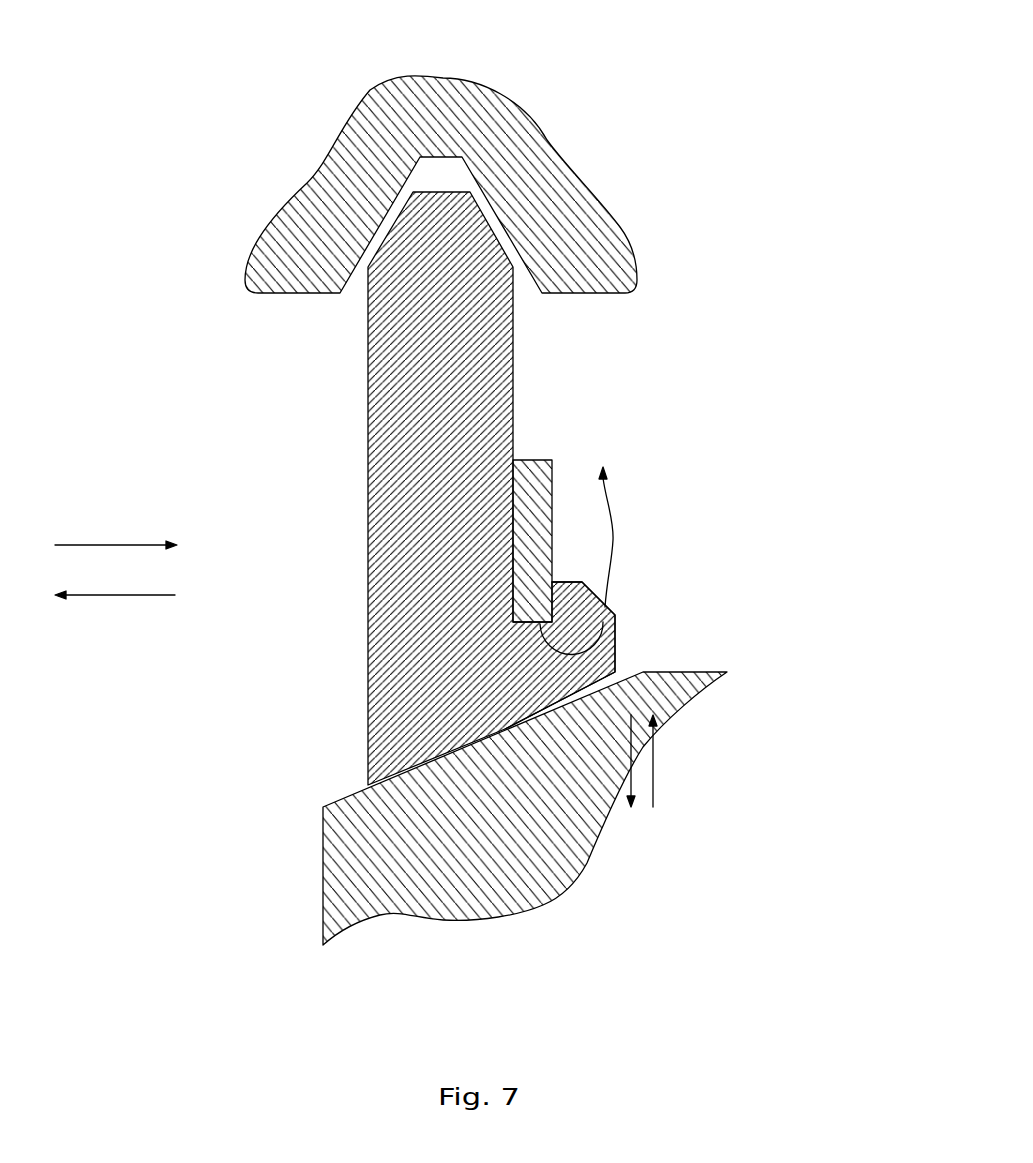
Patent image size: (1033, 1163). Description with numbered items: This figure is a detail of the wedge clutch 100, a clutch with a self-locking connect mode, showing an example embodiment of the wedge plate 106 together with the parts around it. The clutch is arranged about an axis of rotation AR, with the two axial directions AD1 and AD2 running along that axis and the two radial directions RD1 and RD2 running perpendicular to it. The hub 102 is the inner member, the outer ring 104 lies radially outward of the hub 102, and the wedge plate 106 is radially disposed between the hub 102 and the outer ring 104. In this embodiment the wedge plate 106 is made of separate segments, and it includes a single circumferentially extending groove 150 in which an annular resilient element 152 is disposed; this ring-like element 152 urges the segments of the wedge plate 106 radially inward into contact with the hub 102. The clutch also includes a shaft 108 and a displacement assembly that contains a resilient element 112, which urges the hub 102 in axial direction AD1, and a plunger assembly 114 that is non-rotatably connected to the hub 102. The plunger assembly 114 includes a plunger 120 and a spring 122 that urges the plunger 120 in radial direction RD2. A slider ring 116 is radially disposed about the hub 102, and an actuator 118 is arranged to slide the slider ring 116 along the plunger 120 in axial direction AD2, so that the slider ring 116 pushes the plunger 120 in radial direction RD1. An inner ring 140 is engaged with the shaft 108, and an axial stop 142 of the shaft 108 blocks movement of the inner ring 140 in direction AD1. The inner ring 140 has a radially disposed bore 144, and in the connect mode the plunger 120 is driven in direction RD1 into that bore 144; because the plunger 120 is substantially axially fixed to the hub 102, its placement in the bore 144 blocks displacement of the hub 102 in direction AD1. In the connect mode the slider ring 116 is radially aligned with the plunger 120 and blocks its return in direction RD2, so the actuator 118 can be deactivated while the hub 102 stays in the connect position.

The wedge clutch 100 is at (702, 67).
The hub 102 is at (525, 257).
The outer ring 104 is at (445, 78).
The wedge plate 106 is at (383, 205).
The shaft 108 is at (313, 508).
The resilient element 112 is at (323, 378).
The plunger assembly 114 is at (641, 388).
The slider ring 116 is at (623, 200).
The actuator 118 is at (783, 207).
The plunger 120 is at (600, 435).
The spring 122 is at (623, 353).
The inner ring 140 is at (613, 546).
The axial stop 142 is at (692, 470).
The radially disposed bore 144 is at (558, 455).
The circumferentially extending groove 150 is at (613, 538).
The annular resilient element 152 is at (552, 493).
The axial direction AD1 is at (92, 545).
The axial direction AD2 is at (115, 595).
The radial direction RD1 is at (627, 777).
The radial direction RD2 is at (653, 772).
The axis of rotation AR is at (715, 808).